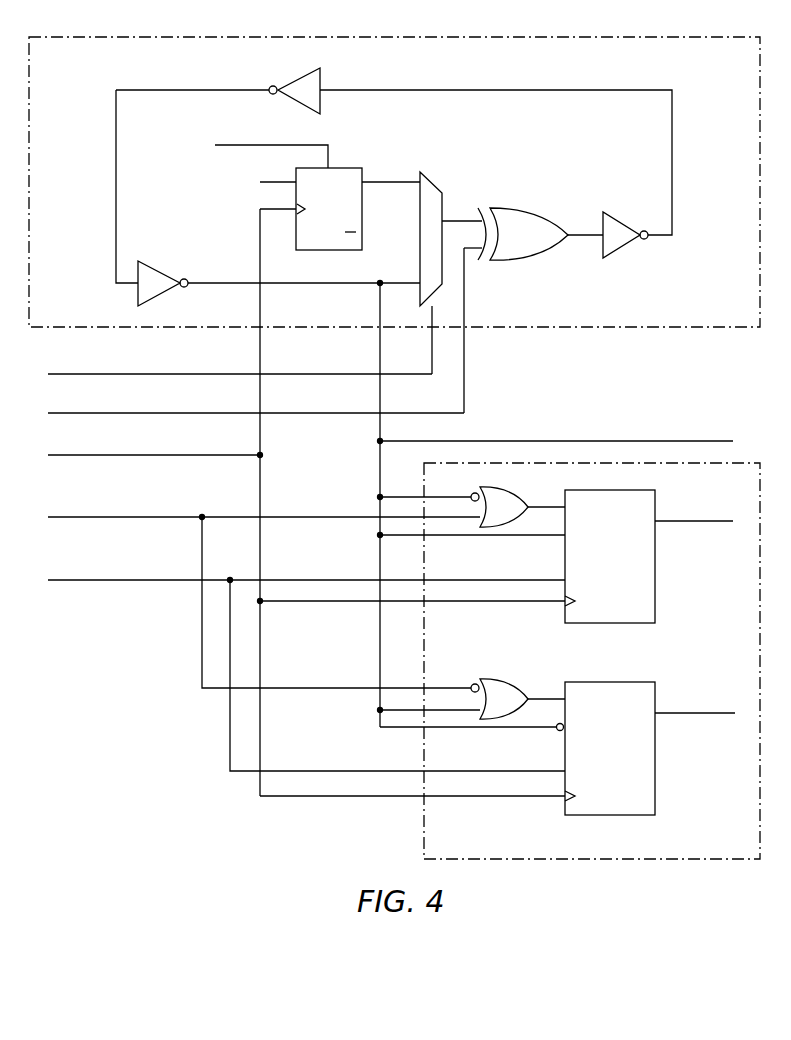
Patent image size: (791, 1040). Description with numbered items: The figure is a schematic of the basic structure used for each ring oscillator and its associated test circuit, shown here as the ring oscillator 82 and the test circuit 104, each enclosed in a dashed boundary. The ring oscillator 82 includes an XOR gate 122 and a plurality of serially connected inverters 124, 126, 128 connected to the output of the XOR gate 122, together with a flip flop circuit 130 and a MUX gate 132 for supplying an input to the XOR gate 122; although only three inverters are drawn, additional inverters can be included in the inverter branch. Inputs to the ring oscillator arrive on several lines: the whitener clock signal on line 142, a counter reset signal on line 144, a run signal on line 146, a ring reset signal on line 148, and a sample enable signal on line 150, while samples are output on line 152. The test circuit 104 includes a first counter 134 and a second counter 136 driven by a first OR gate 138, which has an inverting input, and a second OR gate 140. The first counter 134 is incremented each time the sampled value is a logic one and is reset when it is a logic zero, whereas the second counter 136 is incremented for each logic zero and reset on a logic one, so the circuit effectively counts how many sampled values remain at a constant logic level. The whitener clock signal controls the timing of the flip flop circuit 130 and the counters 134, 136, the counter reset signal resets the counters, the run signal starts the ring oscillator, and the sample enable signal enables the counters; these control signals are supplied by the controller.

The ring oscillator 82 is at (604, 38).
The inverter 126 is at (322, 84).
The inverter 128 is at (157, 272).
The flip flop circuit 130 is at (345, 167).
The MUX gate 132 is at (432, 183).
The XOR gate 122 is at (520, 208).
The inverter 124 is at (620, 247).
The line carrying ring reset signal 148 is at (50, 376).
The line carrying run signal 146 is at (50, 415).
The line carrying whitener clock signal 142 is at (50, 457).
The line carrying counter reset signal 144 is at (50, 519).
The line carrying sample enable signal 150 is at (50, 582).
The sample output line 152 is at (673, 441).
The first OR gate 138 is at (512, 491).
The second OR gate 140 is at (505, 680).
The first counter 134 is at (656, 562).
The second counter 136 is at (656, 757).
The test circuit 104 is at (655, 860).